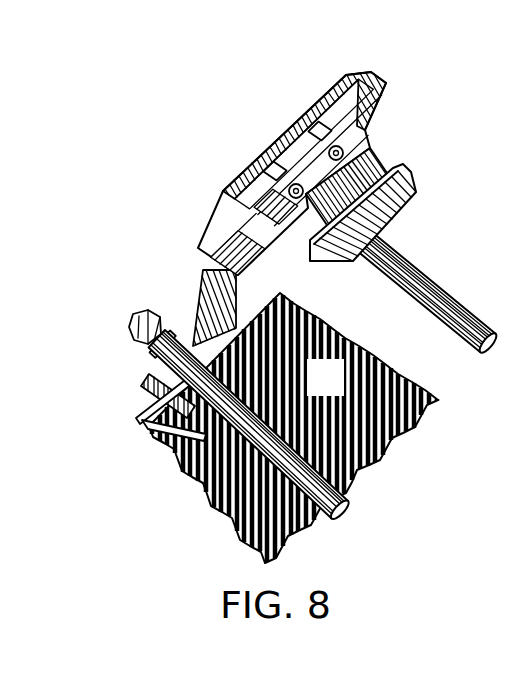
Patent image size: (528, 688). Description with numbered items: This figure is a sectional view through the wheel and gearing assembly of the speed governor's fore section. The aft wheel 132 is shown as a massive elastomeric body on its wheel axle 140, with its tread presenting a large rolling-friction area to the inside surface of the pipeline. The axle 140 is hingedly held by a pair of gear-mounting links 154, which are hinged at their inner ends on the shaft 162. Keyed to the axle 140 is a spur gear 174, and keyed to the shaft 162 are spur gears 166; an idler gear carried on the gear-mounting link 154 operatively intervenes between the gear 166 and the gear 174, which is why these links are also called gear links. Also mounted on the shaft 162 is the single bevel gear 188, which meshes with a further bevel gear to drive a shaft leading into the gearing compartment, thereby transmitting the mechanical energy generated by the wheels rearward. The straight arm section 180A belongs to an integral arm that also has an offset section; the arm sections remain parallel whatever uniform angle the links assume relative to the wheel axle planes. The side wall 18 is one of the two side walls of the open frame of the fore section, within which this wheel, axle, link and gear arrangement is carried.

The side wall 18 is at (378, 69).
The gear-mounting link 154 is at (350, 117).
The spur gear 166 is at (370, 140).
The bevel gear 188 is at (405, 175).
The shaft 162 is at (417, 243).
The aft wheel 132 is at (328, 381).
The wheel axle 140 is at (341, 490).
The spur gear 174 is at (140, 377).
The straight arm section 180A is at (130, 413).